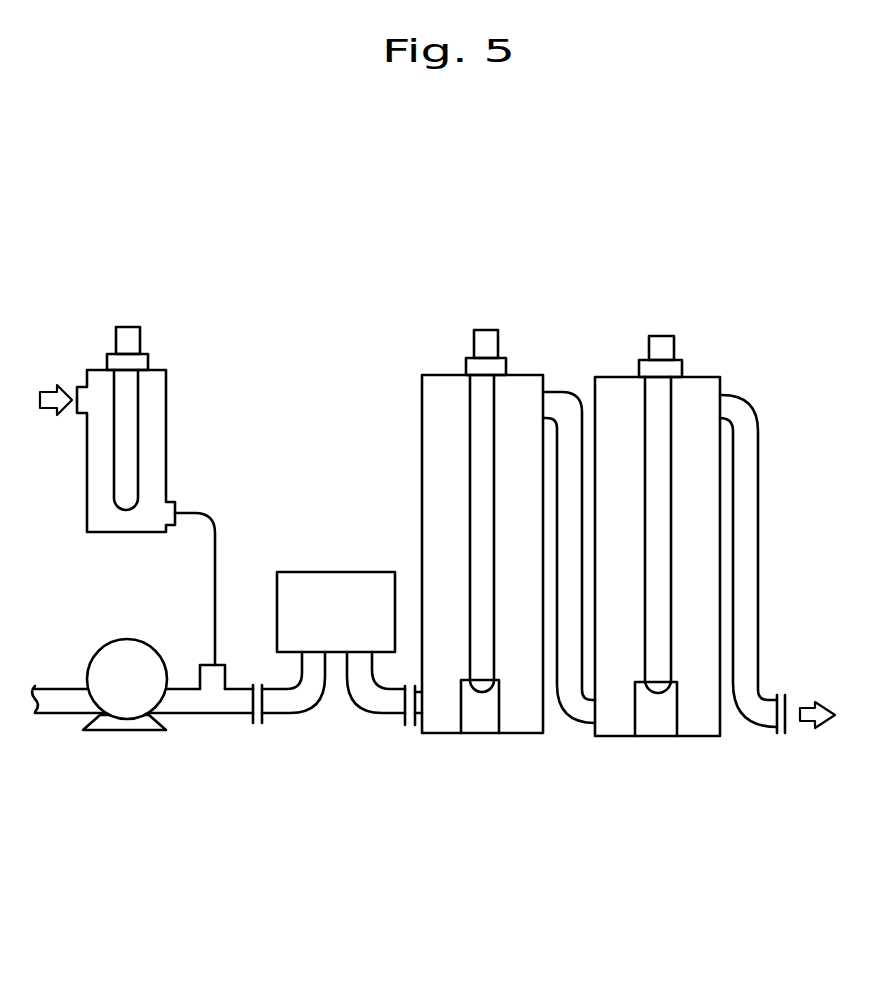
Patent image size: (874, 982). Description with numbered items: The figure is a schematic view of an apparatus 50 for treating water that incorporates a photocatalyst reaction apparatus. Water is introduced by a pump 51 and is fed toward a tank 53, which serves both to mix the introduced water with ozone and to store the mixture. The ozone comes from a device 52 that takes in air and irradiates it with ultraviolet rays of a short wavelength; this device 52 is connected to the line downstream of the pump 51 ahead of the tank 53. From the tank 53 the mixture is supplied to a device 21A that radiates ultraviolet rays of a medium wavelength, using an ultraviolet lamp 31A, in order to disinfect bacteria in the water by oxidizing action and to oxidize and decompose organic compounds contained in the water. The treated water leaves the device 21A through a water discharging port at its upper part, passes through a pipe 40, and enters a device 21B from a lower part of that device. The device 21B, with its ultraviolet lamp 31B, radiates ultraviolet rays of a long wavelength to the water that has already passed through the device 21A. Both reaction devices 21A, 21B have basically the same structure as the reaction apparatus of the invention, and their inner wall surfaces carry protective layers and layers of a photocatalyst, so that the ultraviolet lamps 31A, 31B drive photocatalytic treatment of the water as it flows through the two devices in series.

The apparatus for treating water 50 is at (280, 294).
The pump 51 is at (125, 697).
The device for taking air and radiating ultraviolet rays 52 is at (98, 370).
The tank for mixing water with ozone and storing the mixture 53 is at (345, 570).
The device for radiating ultraviolet rays of a medium wavelength 21A is at (516, 744).
The device for radiating ultraviolet rays of a long wavelength 21B is at (697, 748).
The ultraviolet lamp 31A is at (470, 459).
The ultraviolet lamp 31B is at (669, 498).
The pipe 40 is at (567, 415).